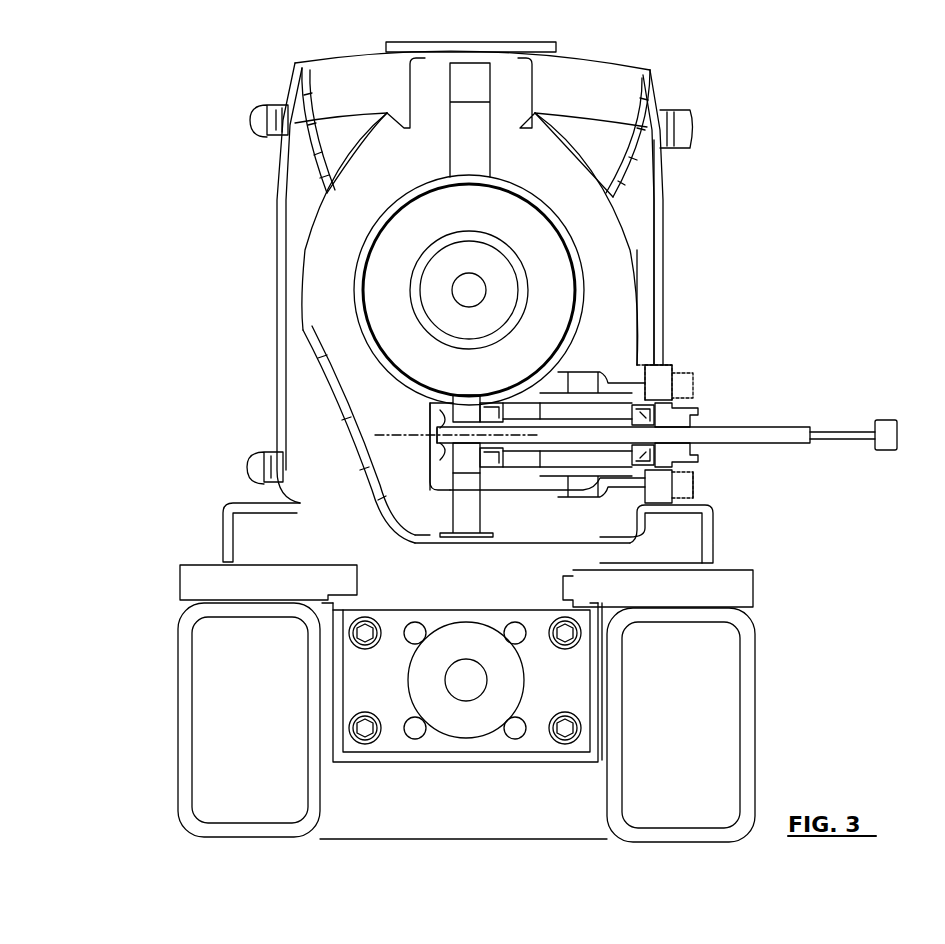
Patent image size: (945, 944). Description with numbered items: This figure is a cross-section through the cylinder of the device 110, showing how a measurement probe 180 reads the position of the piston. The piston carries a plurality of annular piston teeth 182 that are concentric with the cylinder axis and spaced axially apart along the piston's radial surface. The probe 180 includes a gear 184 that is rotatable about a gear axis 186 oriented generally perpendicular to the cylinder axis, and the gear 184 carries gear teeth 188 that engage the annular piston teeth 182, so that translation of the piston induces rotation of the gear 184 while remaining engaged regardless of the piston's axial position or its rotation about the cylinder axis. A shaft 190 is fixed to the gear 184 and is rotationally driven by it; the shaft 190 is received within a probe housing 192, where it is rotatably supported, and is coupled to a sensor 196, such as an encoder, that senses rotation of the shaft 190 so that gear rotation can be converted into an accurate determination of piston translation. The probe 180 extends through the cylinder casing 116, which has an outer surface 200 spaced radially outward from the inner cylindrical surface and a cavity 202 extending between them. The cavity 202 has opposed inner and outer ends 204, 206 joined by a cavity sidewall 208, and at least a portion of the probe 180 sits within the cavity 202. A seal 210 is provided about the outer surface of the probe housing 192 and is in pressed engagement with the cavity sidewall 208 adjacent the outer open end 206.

The fiber optic connector polishing device 110 is at (258, 288).
The cylinder casing 116 is at (622, 270).
The probe 180 is at (788, 395).
The annular piston teeth 182 is at (386, 348).
The gear 184 is at (463, 455).
The gear axis 186 is at (420, 432).
The gear teeth 188 is at (473, 394).
The shaft 190 is at (727, 437).
The probe housing 192 is at (688, 473).
The sensor 196 is at (885, 452).
The outer surface 200 is at (643, 297).
The cavity 202 is at (555, 485).
The inner end 204 is at (548, 393).
The outer end 206 is at (700, 410).
The cavity sidewall 208 is at (590, 372).
The seal 210 is at (638, 363).